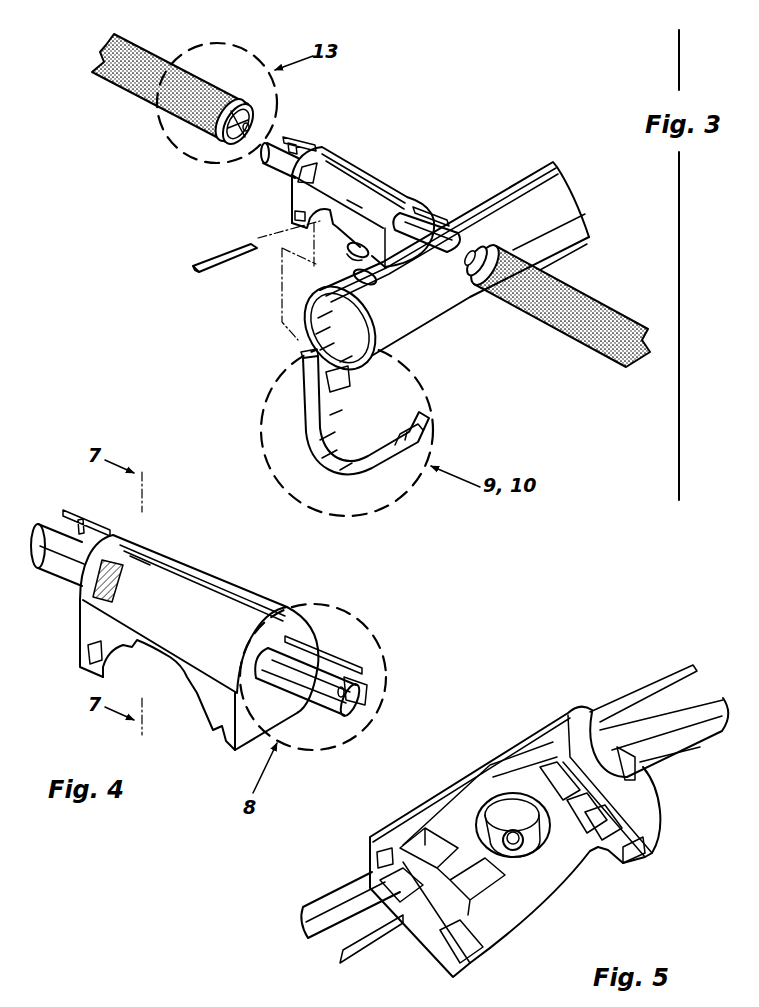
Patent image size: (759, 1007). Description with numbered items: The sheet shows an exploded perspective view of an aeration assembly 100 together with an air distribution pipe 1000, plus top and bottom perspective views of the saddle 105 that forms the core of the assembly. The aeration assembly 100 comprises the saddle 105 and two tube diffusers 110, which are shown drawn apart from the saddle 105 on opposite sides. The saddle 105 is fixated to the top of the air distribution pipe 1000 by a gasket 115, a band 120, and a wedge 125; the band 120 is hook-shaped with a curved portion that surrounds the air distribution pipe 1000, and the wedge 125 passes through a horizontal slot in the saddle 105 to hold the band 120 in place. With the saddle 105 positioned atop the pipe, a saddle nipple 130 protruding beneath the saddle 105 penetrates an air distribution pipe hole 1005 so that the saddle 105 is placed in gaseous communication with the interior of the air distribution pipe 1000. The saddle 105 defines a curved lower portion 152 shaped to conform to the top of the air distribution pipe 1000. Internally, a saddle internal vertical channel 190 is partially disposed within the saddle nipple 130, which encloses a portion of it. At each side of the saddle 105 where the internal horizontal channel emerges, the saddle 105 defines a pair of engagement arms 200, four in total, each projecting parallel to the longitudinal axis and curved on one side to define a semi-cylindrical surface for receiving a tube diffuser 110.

In FIG. 3, the aeration assembly 100 is at (457, 119).
In FIG. 3, the saddle 105 is at (377, 159).
In FIG. 4, the saddle 105 is at (232, 567).
In FIG. 5, the saddle 105 is at (532, 704).
In FIG. 3, the tube diffuser 110 is at (119, 97).
In FIG. 3, the gasket 115 is at (346, 250).
In FIG. 3, the band 120 is at (300, 451).
In FIG. 3, the wedge 125 is at (198, 265).
In FIG. 5, the saddle nipple 130 is at (489, 812).
In FIG. 4, the curved lower portion 152 is at (187, 678).
In FIG. 5, the curved lower portion 152 is at (490, 781).
In FIG. 5, the saddle internal vertical channel 190 is at (517, 850).
In FIG. 4, the engagement arm 200 is at (80, 504).
In FIG. 5, the engagement arm 200 is at (653, 671).
In FIG. 3, the air distribution pipe 1000 is at (515, 171).
In FIG. 3, the air distribution pipe hole 1005 is at (373, 275).